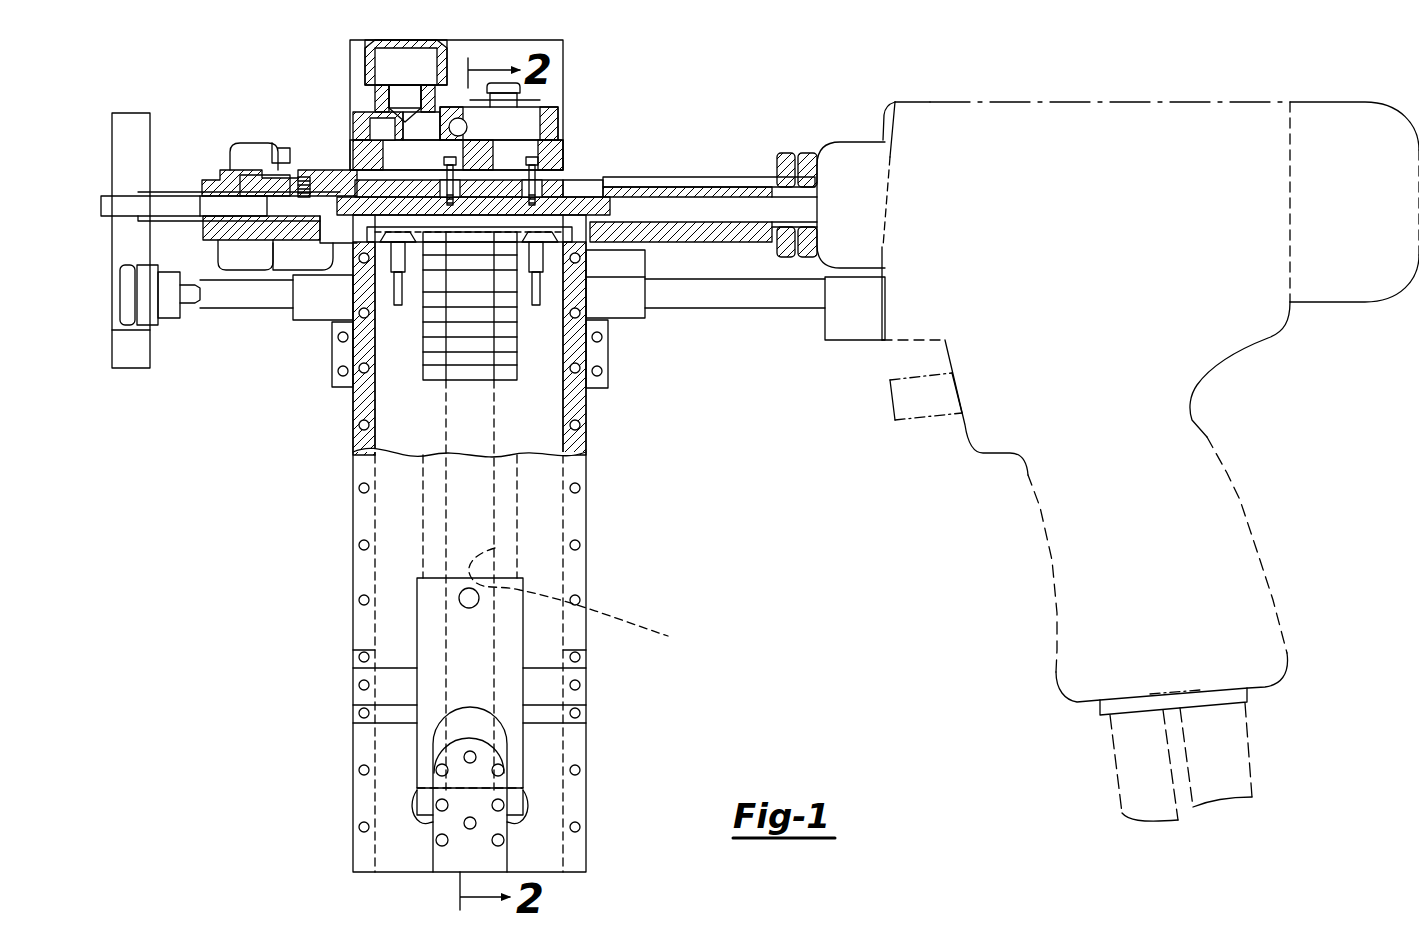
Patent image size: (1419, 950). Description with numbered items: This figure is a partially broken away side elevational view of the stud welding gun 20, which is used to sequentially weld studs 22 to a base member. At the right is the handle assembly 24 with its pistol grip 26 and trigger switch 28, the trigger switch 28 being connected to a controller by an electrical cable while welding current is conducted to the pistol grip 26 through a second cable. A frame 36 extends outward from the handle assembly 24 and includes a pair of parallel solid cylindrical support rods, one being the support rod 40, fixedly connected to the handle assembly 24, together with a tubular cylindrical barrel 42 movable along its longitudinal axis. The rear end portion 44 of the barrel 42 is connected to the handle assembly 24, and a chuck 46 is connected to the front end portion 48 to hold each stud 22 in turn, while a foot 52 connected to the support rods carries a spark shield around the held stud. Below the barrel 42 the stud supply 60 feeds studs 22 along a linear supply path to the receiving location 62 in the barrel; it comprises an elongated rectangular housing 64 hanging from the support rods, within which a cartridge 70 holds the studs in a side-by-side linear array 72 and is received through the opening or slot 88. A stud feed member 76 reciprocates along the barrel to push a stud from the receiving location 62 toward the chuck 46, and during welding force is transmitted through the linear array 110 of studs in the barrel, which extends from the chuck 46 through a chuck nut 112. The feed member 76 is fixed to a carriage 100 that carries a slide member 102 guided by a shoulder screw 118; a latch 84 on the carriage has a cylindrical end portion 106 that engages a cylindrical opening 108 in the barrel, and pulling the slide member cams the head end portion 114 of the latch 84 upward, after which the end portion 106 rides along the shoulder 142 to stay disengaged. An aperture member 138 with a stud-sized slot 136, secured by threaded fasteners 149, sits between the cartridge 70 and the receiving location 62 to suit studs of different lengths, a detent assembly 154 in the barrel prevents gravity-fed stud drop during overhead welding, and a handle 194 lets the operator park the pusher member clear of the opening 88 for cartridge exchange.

The stud welding gun 20 is at (915, 78).
The studs 22 is at (157, 210).
The handle assembly 24 is at (1098, 378).
The pistol grip 26 is at (1256, 483).
The trigger switch 28 is at (942, 428).
The frame 36 is at (710, 172).
The support rod 40 is at (693, 300).
The barrel 42 is at (648, 180).
The rear end portion 44 is at (808, 193).
The chuck 46 is at (165, 192).
The front end portion 48 is at (262, 185).
The foot 52 is at (135, 370).
The stud supply 60 is at (352, 746).
The receiving location 62 is at (365, 212).
The housing 64 is at (355, 596).
The cartridge 70 is at (538, 514).
The linear array 72 is at (468, 370).
The stud feed member 76 is at (507, 220).
The latch 84 is at (456, 62).
The opening or slot 88 is at (583, 600).
The carriage 100 is at (610, 88).
The slide member 102 is at (556, 110).
The cylindrical end portion 106 is at (440, 195).
The cylindrical opening 108 is at (505, 275).
The linear array 110 is at (215, 205).
The chuck nut 112 is at (395, 118).
The head end portion 114 is at (365, 60).
The shoulder screw 118 is at (513, 92).
The slot 136 is at (565, 212).
The aperture member 138 is at (372, 182).
The shoulder 142 is at (428, 190).
The threaded fastener 149 is at (412, 295).
The detent assembly 154 is at (302, 178).
The handle 194 is at (555, 583).